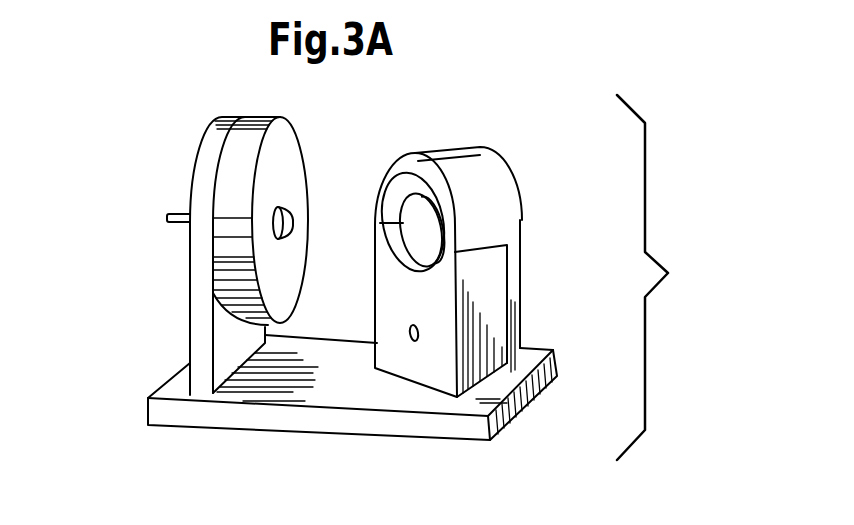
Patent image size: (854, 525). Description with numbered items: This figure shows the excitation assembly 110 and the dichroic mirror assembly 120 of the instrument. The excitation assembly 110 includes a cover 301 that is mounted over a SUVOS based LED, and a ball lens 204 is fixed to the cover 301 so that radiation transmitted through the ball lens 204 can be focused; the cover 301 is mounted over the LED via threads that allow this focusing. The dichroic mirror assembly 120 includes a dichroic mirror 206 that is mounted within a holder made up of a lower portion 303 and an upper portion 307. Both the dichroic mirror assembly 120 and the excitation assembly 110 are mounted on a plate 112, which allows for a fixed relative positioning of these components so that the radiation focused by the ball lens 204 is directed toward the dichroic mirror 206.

The excitation assembly 110 is at (212, 256).
The plate 112 is at (453, 428).
The dichroic mirror assembly 120 is at (668, 273).
The ball lens 204 is at (292, 218).
The dichroic mirror 206 is at (410, 235).
The cover 301 is at (217, 310).
The lower portion 303 is at (495, 278).
The upper portion 307 is at (490, 178).